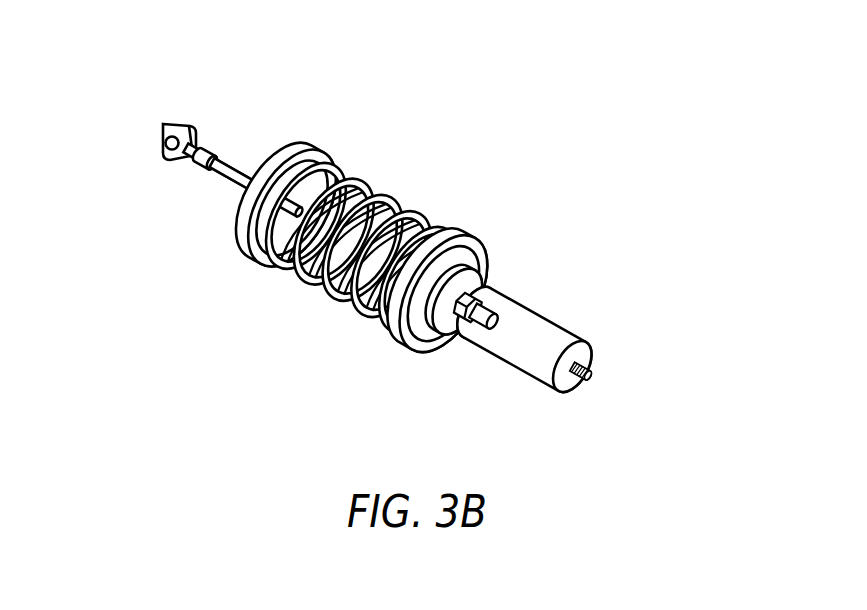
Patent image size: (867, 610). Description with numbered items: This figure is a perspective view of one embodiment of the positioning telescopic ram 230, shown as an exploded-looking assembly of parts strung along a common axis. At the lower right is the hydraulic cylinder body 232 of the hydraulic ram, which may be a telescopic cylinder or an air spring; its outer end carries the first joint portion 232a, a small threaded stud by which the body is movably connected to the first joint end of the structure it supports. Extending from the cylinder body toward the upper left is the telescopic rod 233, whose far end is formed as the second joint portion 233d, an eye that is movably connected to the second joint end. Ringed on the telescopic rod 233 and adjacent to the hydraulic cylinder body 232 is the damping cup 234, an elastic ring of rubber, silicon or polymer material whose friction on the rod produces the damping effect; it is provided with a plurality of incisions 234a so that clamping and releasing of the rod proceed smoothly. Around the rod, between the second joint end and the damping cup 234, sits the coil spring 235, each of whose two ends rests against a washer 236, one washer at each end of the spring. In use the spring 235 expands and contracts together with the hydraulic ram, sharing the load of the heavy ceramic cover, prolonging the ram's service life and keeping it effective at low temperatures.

The positioning telescopic ram 230 is at (688, 162).
The hydraulic cylinder body 232 is at (533, 393).
The first joint portion 232a is at (578, 384).
The telescopic rod 233 is at (193, 210).
The second joint portion 233d is at (176, 151).
The damping cup 234 is at (440, 323).
The incisions 234a is at (486, 273).
The spring 235 is at (338, 300).
The washer 236 is at (298, 300).